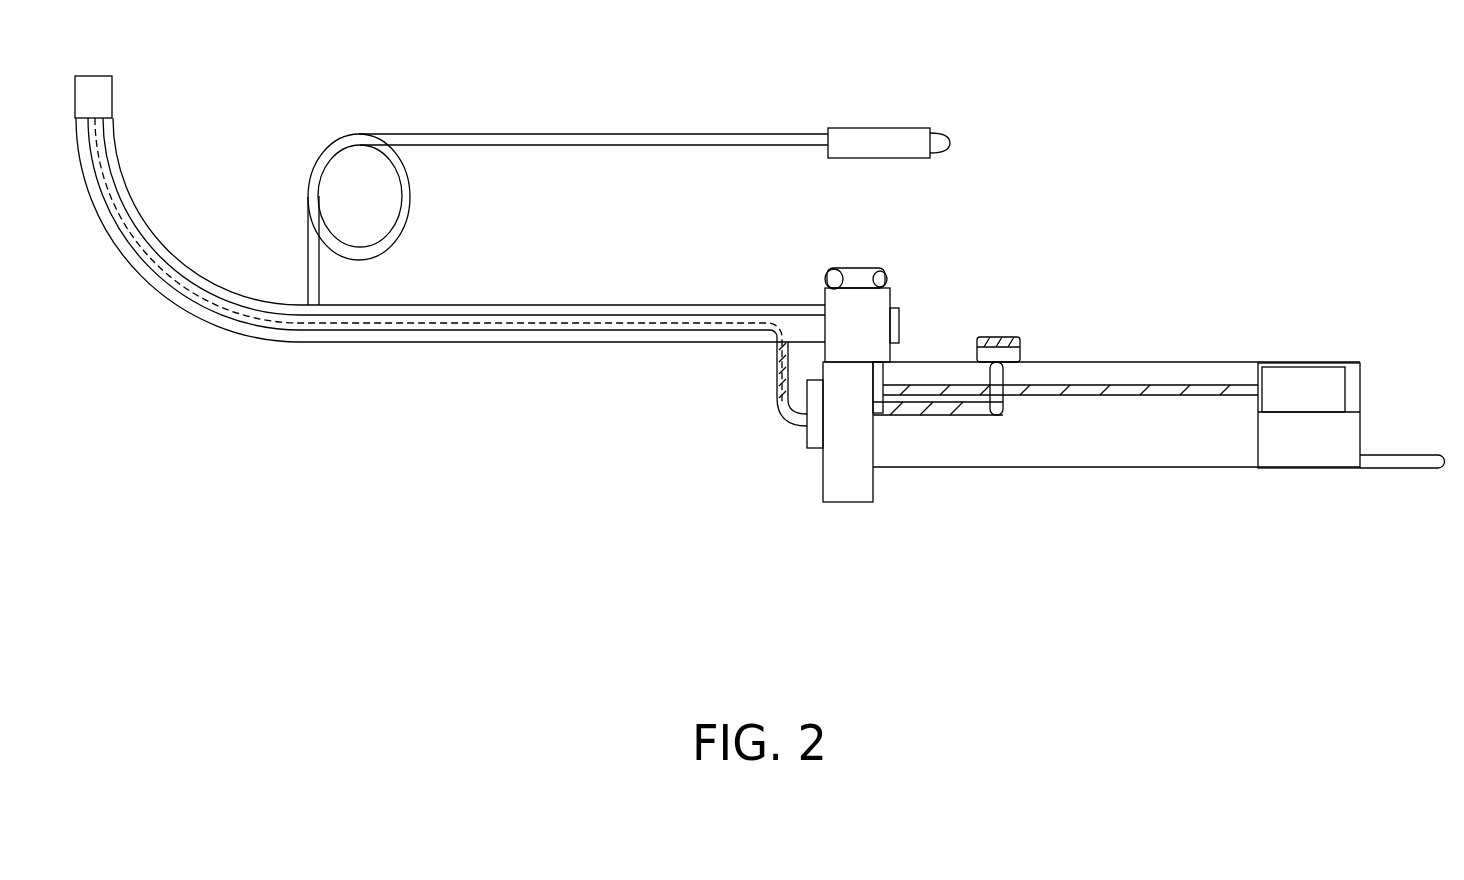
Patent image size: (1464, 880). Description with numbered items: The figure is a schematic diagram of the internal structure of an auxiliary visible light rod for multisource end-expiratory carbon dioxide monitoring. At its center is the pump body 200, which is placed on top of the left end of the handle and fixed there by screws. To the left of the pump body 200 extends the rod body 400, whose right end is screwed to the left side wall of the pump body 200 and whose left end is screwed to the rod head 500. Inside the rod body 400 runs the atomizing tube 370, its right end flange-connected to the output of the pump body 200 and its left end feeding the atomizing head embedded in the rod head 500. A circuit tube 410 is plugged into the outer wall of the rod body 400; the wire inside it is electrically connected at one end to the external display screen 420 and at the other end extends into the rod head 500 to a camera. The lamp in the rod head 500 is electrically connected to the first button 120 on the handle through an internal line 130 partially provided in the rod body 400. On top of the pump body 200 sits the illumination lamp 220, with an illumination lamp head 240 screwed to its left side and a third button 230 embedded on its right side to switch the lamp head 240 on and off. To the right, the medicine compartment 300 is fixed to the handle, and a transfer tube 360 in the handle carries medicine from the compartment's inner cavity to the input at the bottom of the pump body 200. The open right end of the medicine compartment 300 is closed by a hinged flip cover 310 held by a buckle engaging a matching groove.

The rod head 500 is at (97, 97).
The circuit tube 410 is at (402, 177).
The display screen 420 is at (863, 145).
The rod body 400 is at (647, 342).
The atomizing tube 370 is at (515, 323).
The illumination lamp head 240 is at (824, 280).
The illumination lamp 220 is at (843, 266).
The third button 230 is at (880, 270).
The pump body 200 is at (870, 300).
The first button 120 is at (999, 337).
The transfer tube 360 is at (1108, 385).
The internal line 130 is at (978, 415).
The medicine compartment 300 is at (1306, 447).
The flip cover 310 is at (1398, 470).